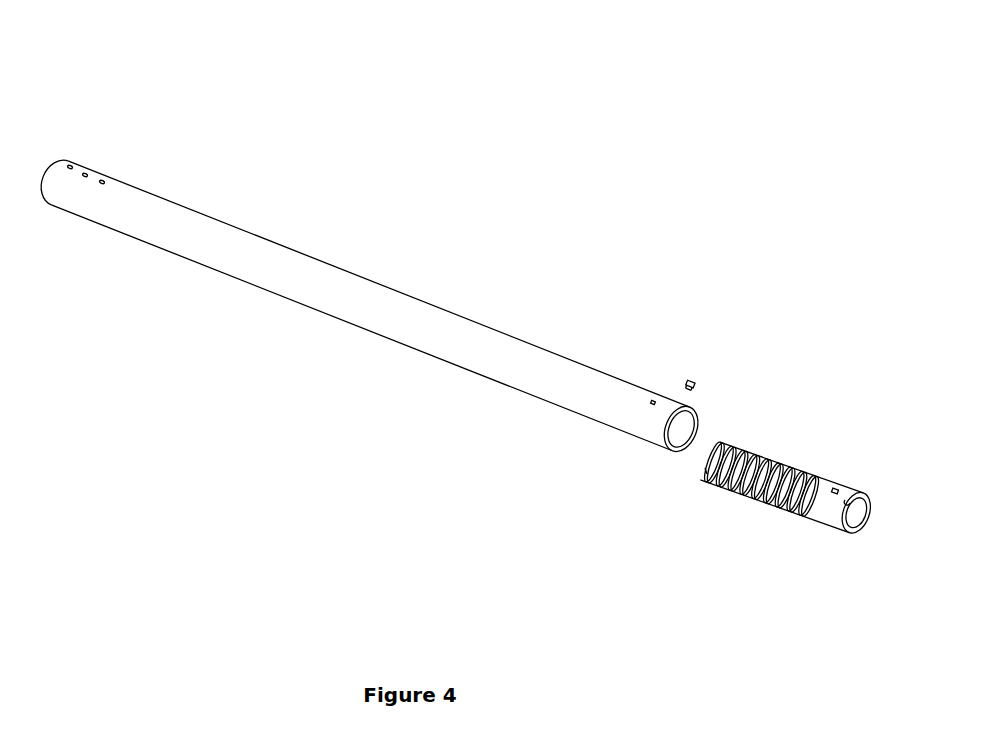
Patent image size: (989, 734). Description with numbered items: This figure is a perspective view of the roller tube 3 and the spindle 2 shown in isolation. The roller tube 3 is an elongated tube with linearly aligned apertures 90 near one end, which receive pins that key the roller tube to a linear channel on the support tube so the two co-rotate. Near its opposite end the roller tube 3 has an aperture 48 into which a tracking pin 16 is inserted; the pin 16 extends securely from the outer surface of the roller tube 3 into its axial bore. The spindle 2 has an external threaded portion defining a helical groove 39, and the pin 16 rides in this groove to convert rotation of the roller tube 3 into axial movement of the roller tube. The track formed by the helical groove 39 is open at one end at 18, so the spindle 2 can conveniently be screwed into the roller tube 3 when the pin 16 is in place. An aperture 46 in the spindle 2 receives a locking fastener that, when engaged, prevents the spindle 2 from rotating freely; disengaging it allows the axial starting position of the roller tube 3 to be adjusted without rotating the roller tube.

The spindle 2 is at (804, 440).
The roller tube 3 is at (277, 238).
The pin 16 is at (690, 379).
The open end of helical groove track 18 is at (697, 473).
The helical groove 39 is at (728, 448).
The aperture in spindle 46 is at (847, 496).
The aperture in roller tube 48 is at (653, 400).
The apertures 90 is at (100, 181).